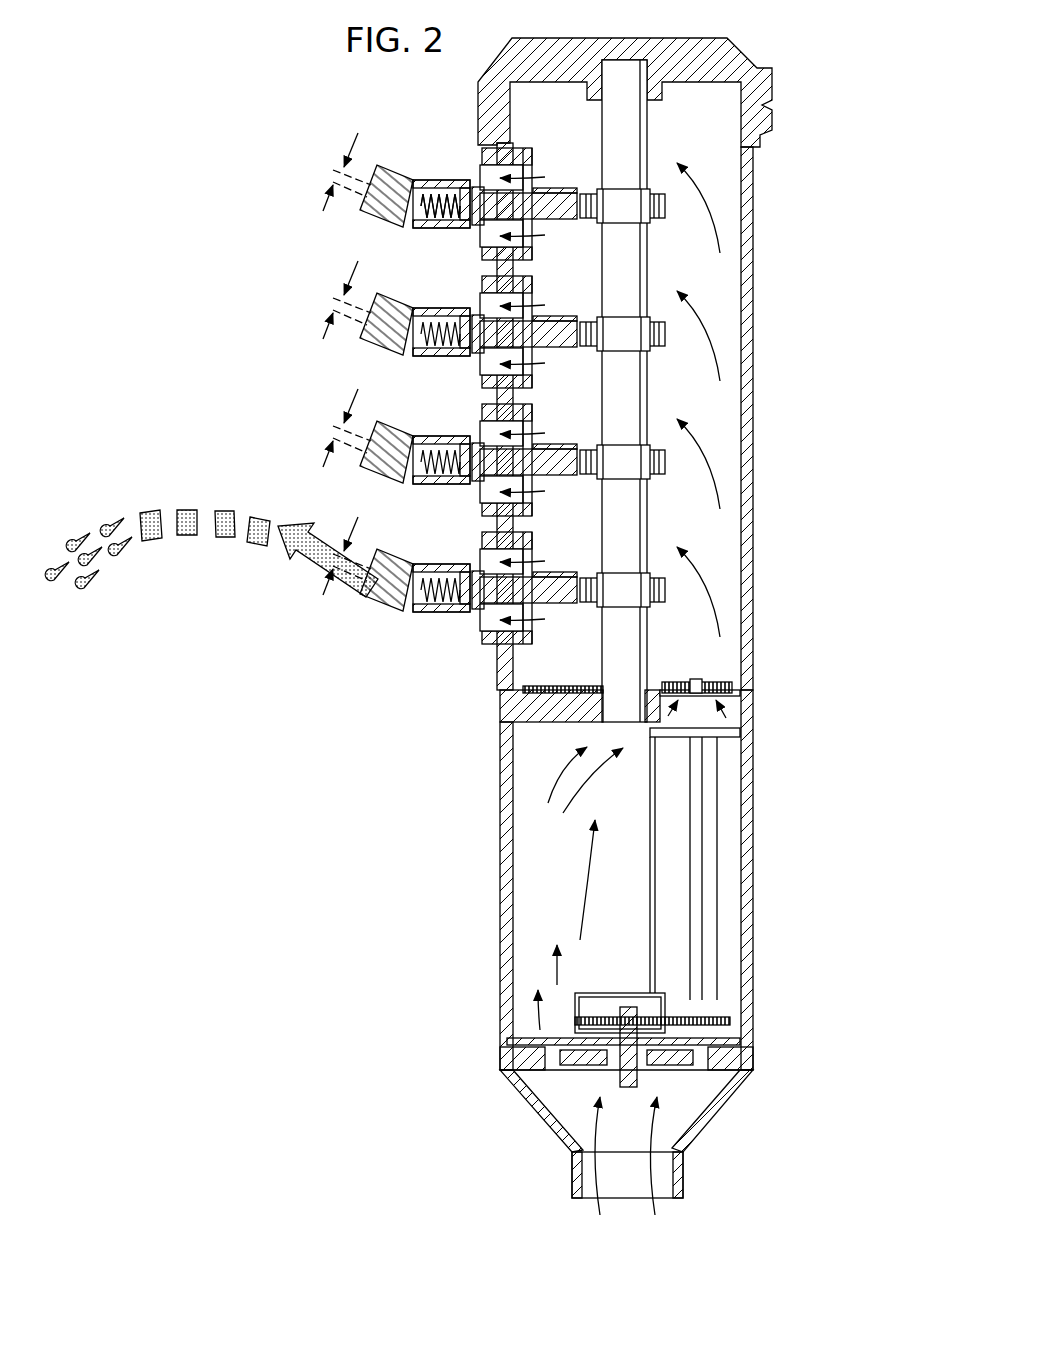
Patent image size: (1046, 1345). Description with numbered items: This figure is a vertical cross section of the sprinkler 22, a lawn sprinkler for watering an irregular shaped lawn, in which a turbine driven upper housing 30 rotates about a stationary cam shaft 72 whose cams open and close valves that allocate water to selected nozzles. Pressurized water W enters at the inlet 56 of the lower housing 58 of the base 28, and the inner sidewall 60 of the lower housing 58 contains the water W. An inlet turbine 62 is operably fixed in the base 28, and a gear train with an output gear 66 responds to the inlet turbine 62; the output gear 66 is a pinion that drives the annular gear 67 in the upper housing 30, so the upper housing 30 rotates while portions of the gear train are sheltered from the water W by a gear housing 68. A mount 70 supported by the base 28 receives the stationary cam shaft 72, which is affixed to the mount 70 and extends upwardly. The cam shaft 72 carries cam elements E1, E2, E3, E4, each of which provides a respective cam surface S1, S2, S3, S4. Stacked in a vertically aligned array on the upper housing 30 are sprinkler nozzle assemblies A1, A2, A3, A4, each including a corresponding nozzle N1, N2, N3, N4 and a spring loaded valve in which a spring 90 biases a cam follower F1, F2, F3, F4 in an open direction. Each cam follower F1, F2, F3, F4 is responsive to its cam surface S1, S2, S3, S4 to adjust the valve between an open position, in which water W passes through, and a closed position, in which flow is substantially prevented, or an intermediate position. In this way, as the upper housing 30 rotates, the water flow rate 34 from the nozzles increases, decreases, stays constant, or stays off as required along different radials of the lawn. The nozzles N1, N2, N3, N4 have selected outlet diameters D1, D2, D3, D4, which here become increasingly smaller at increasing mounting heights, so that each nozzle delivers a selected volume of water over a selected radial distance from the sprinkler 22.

The sprinkler 22 is at (792, 84).
The base 28 is at (755, 800).
The upper housing 30 is at (755, 388).
The water flow rate 34 is at (300, 588).
The inlet 56 is at (688, 1185).
The lower housing 58 is at (735, 1100).
The inner sidewall 60 is at (503, 900).
The inlet turbine 62 is at (568, 1062).
The output gear 66 is at (730, 690).
The annular gear 67 is at (522, 688).
The gear housing 68 is at (652, 890).
The mount 70 is at (545, 715).
The stationary cam shaft 72 is at (640, 128).
The spring 90 is at (438, 194).
The sprinkler nozzle assembly A1 is at (422, 564).
The sprinkler nozzle assembly A2 is at (422, 436).
The sprinkler nozzle assembly A3 is at (422, 308).
The sprinkler nozzle assembly A4 is at (418, 180).
The nozzle N1 is at (385, 612).
The nozzle N2 is at (385, 484).
The nozzle N3 is at (385, 356).
The nozzle N4 is at (383, 230).
The outlet diameter D1 is at (337, 576).
The outlet diameter D2 is at (337, 448).
The outlet diameter D3 is at (338, 320).
The outlet diameter D4 is at (338, 191).
The cam element E1 is at (648, 607).
The cam element E2 is at (648, 480).
The cam element E3 is at (648, 352).
The cam element E4 is at (598, 188).
The cam follower F1 is at (562, 604).
The cam follower F2 is at (562, 476).
The cam follower F3 is at (562, 348).
The cam follower F4 is at (562, 220).
The cam surface S1 is at (665, 592).
The cam surface S2 is at (665, 464).
The cam surface S3 is at (665, 336).
The cam surface S4 is at (665, 208).
The water W is at (150, 512).